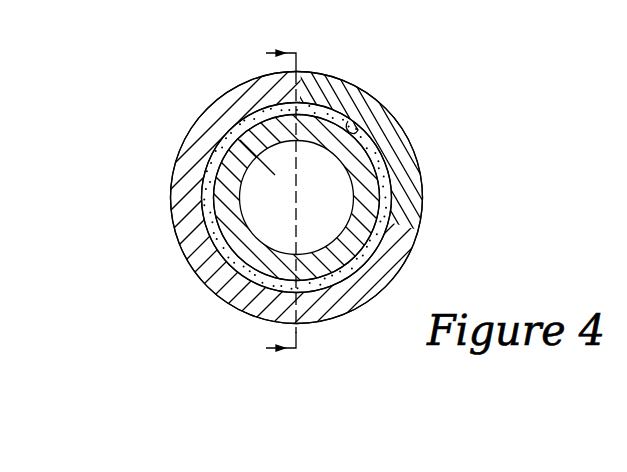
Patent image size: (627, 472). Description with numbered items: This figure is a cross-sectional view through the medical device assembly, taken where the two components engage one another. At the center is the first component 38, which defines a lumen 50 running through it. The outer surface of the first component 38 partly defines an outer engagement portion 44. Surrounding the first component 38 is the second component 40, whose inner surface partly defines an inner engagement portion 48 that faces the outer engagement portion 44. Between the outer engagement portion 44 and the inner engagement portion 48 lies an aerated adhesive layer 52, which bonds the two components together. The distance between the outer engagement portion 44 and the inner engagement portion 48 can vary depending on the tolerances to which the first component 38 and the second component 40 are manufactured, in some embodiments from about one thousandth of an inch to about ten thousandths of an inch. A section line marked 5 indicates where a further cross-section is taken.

The first component 38 is at (228, 216).
The second component 40 is at (403, 173).
The outer engagement portion 44 is at (224, 276).
The inner engagement portion 48 is at (358, 128).
The lumen 50 is at (228, 126).
The aerated adhesive layer 52 is at (378, 240).
The section line 5- 5 is at (272, 201).